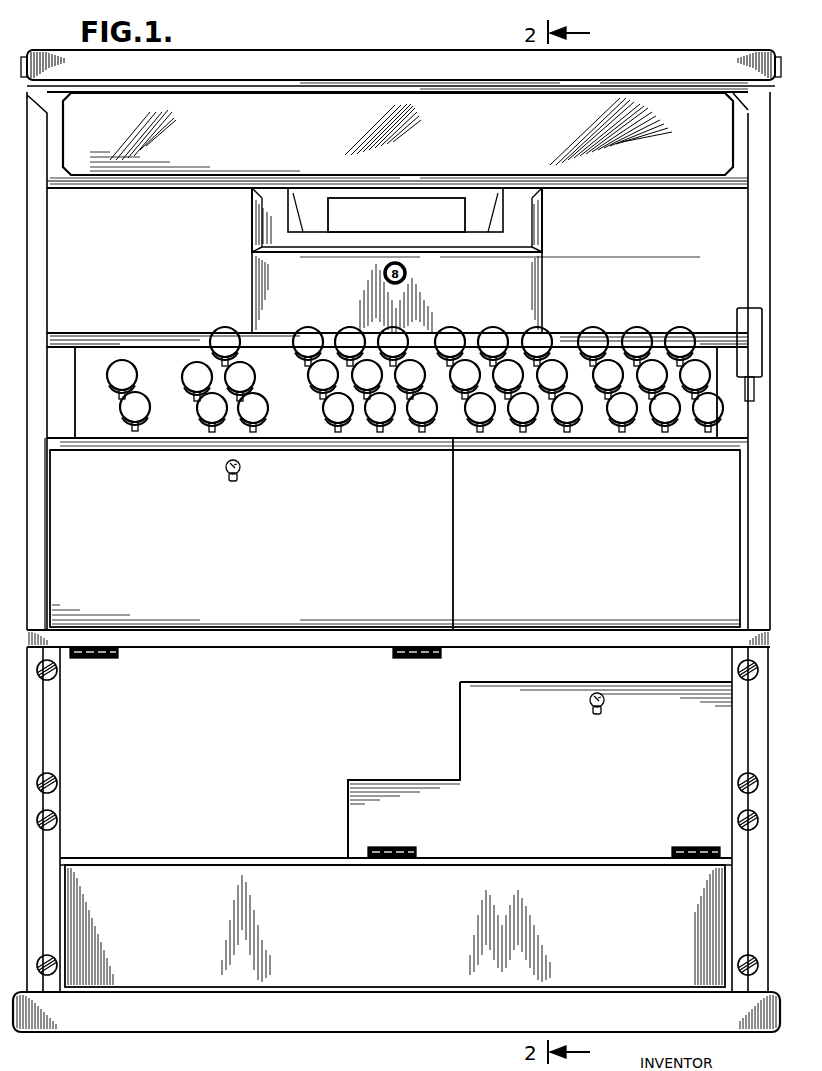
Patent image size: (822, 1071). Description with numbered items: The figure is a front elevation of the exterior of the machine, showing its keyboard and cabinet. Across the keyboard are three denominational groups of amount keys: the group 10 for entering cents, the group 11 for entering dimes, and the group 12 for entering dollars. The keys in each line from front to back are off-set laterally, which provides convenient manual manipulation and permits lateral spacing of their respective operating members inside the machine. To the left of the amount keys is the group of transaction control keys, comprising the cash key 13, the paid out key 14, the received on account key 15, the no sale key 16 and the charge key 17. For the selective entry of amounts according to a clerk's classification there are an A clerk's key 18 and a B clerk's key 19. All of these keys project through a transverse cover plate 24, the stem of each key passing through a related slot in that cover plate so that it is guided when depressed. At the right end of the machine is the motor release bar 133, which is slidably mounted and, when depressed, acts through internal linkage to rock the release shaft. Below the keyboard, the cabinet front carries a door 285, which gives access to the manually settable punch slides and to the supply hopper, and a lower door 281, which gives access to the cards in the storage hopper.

The group of amount keys for entering cents 10 is at (628, 316).
The group of amount keys for entering dimes 11 is at (479, 319).
The group of amount keys for entering dollars 12 is at (336, 327).
The cash key 13 is at (225, 327).
The paid out key 14 is at (197, 362).
The received on account key 15 is at (197, 408).
The no sale key 16 is at (268, 408).
The charge key 17 is at (255, 377).
The A clerk's key 18 is at (137, 375).
The B clerk's key 19 is at (121, 409).
The transverse cover plate 24 is at (293, 430).
The motor release bar 133 is at (737, 315).
The door 285 is at (392, 534).
The door 281 is at (472, 750).